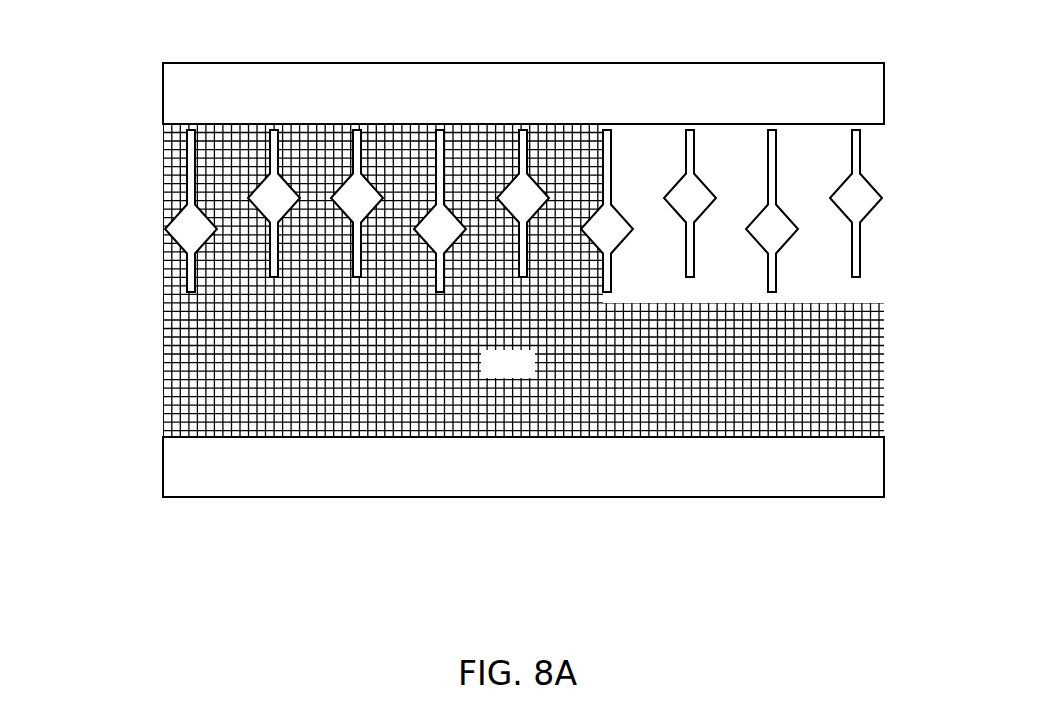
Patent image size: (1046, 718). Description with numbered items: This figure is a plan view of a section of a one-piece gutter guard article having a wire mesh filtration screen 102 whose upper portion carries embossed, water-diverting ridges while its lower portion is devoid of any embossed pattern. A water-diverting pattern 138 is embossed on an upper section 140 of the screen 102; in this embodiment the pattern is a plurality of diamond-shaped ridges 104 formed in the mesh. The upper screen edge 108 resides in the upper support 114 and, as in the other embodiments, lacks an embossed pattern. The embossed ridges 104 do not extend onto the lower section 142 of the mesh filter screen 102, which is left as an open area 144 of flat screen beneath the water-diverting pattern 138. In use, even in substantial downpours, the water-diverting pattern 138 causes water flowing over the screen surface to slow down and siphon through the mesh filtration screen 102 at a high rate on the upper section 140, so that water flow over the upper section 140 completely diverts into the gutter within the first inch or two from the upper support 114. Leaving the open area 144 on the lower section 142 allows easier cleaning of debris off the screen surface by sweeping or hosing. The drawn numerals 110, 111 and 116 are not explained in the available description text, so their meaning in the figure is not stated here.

The mesh filter screen 102 is at (506, 284).
The diamond-shaped ridges 104 is at (525, 158).
The upper screen edge 108 is at (463, 93).
The second plate 110 is at (463, 467).
The pin end 111 is at (356, 131).
The upper support 114 is at (744, 105).
The second substrate 116 is at (744, 479).
The water-diverting pattern 138 is at (468, 284).
The upper section 140 is at (227, 157).
The lower section 142 is at (523, 334).
The open area 144 is at (526, 375).